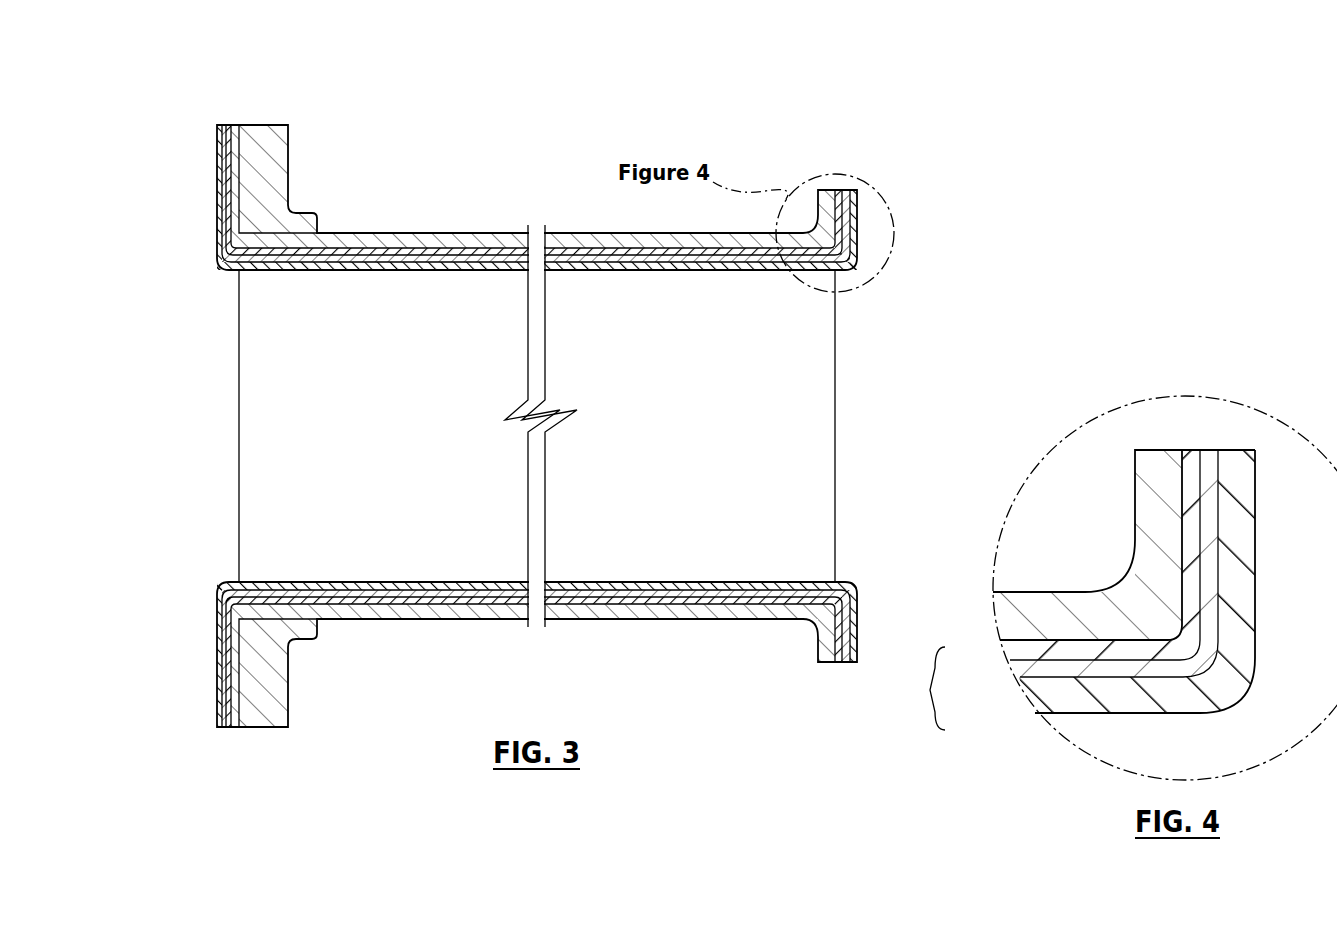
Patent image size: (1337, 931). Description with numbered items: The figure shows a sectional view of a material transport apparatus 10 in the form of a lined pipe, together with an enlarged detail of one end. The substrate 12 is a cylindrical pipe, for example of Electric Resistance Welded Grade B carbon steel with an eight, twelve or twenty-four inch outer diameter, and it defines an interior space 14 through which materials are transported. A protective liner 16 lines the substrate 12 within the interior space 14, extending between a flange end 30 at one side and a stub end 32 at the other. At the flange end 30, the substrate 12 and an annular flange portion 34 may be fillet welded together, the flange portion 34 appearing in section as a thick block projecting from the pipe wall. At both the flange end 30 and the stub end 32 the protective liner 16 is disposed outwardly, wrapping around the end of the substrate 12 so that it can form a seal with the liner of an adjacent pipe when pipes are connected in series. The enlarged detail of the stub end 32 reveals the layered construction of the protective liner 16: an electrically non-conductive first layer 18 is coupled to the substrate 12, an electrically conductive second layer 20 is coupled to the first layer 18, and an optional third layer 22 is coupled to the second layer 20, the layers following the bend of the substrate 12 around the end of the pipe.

In FIG. 3, the material transport apparatus 10 is at (340, 122).
In FIG. 3, the substrate 12 is at (450, 233).
In FIG. 4, the substrate 12 is at (1150, 507).
In FIG. 3, the interior space 14 is at (400, 442).
In FIG. 3, the protective liner 16 is at (210, 208).
In FIG. 4, the protective liner 16 is at (921, 688).
In FIG. 4, the first layer 18 is at (1015, 650).
In FIG. 4, the second layer 20 is at (1012, 668).
In FIG. 4, the third layer 22 is at (1030, 695).
In FIG. 3, the flange end 30 is at (213, 114).
In FIG. 3, the stub end 32 is at (872, 170).
In FIG. 4, the stub end 32 is at (1275, 592).
In FIG. 3, the annular flange portion 34 is at (285, 163).